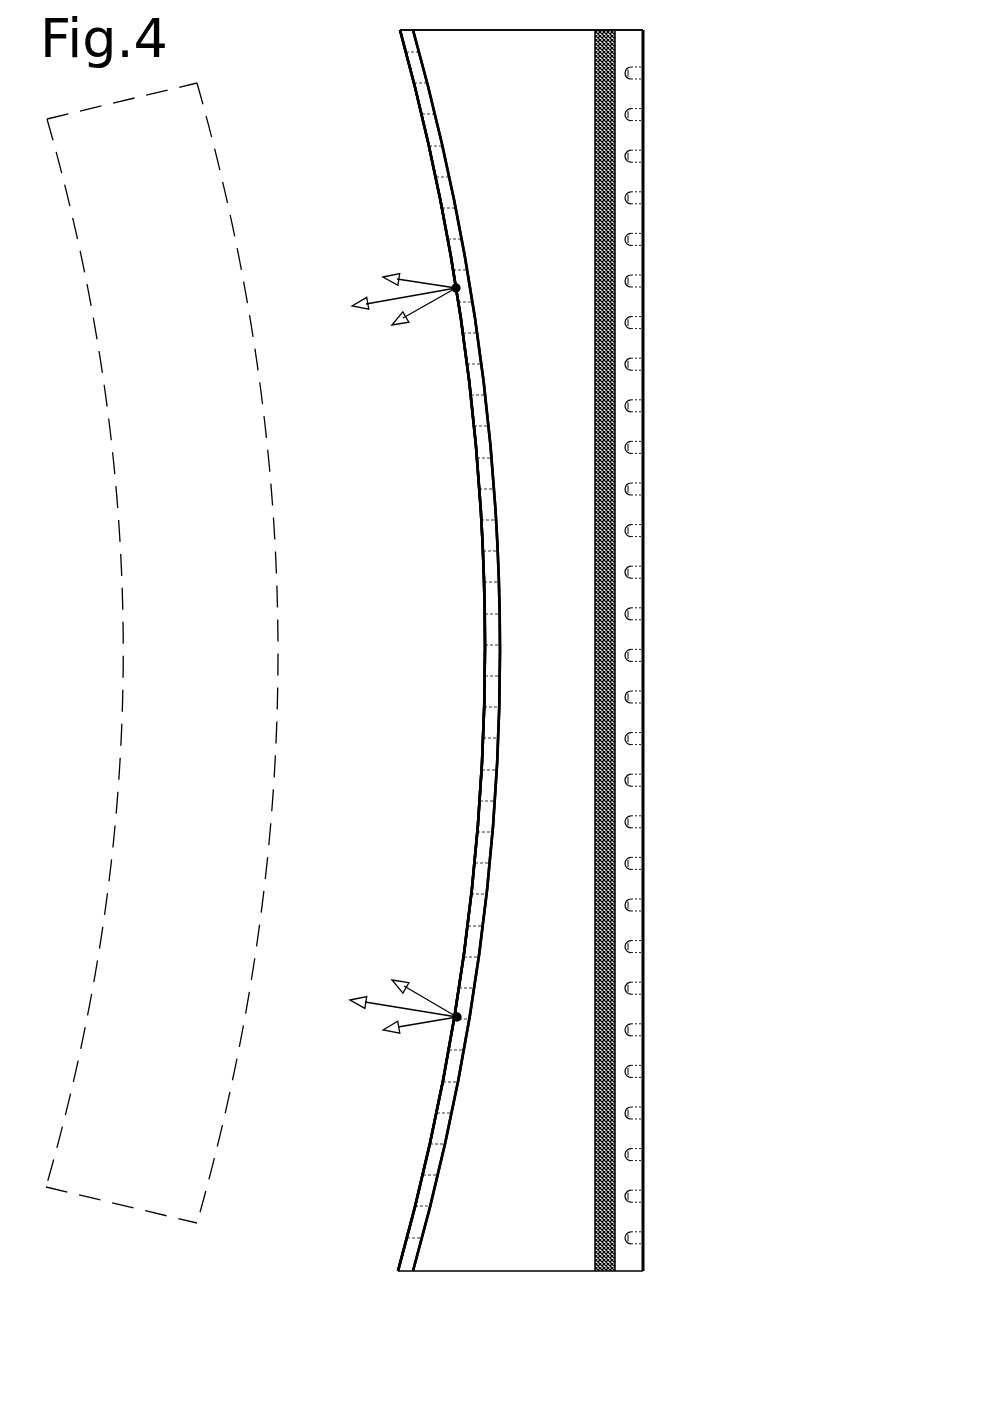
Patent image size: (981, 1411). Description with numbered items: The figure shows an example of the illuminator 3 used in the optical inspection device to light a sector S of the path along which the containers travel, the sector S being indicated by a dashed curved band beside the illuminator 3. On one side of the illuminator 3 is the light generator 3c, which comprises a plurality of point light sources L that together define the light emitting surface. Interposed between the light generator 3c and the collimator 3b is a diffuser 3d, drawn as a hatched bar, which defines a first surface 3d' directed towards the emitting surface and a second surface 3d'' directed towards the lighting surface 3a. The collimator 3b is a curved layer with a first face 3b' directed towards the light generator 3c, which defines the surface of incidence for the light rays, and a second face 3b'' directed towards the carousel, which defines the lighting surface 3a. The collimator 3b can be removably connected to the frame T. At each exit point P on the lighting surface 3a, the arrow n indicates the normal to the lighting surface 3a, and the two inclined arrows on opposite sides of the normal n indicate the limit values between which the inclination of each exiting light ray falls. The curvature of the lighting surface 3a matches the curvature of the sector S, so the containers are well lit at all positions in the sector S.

The illuminator 3 is at (553, 1273).
The lighting surface 3a is at (485, 637).
The collimator 3b is at (482, 650).
The first face 3b' is at (587, 650).
The second face 3b'' is at (436, 650).
The light generator 3c is at (634, 259).
The diffuser 3d is at (574, 650).
The first surface 3d' is at (693, 650).
The second surface 3d'' is at (558, 650).
The point light sources L is at (643, 406).
The exit point P is at (472, 289).
The normal n is at (380, 298).
The sector of the path S is at (238, 512).
The frame T is at (643, 45).